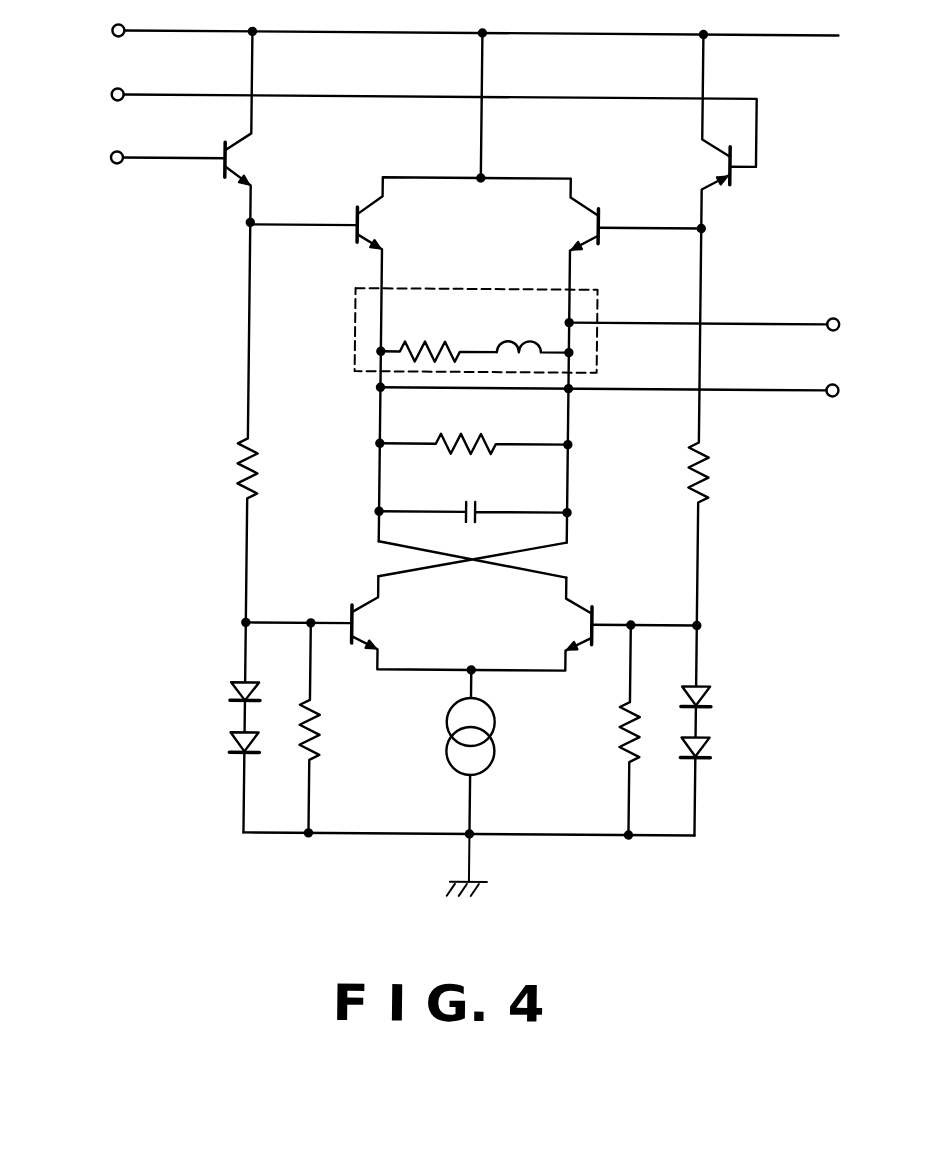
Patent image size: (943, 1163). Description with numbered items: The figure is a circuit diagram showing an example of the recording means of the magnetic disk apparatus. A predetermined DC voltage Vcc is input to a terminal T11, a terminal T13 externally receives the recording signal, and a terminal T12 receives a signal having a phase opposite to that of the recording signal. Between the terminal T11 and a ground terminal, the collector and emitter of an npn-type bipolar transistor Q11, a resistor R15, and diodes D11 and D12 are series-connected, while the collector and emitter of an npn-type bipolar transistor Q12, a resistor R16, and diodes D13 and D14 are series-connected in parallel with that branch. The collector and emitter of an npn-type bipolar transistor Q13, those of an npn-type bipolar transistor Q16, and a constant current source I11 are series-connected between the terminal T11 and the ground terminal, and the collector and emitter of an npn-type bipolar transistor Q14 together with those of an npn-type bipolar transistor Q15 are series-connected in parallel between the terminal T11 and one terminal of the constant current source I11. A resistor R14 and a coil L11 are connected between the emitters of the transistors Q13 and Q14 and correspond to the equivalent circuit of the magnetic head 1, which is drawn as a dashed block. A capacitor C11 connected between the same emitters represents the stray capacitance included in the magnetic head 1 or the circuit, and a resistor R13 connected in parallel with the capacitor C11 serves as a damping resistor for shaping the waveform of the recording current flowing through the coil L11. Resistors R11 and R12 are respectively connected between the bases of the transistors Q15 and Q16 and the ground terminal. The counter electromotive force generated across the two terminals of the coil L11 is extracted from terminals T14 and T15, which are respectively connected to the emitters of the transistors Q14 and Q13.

The terminal T11 is at (108, 34).
The terminal T12 is at (108, 98).
The terminal T13 is at (108, 161).
The terminal T14 is at (833, 316).
The terminal T15 is at (833, 382).
The npn-type bipolar transistor Q11 is at (242, 164).
The npn-type bipolar transistor Q12 is at (711, 166).
The npn-type bipolar transistor Q13 is at (374, 228).
The npn-type bipolar transistor Q14 is at (578, 228).
The npn-type bipolar transistor Q15 is at (368, 626).
The npn-type bipolar transistor Q16 is at (574, 626).
The resistor R11 is at (324, 727).
The resistor R12 is at (623, 726).
The resistor R13 is at (490, 444).
The resistor R14 is at (430, 342).
The resistor R15 is at (258, 471).
The resistor R16 is at (709, 473).
The capacitor C11 is at (489, 508).
The coil L11 is at (518, 342).
The diode D11 is at (237, 682).
The diode D12 is at (239, 733).
The diode D13 is at (705, 696).
The diode D14 is at (705, 742).
The constant current source I11 is at (495, 768).
The magnetic head 1 is at (587, 303).